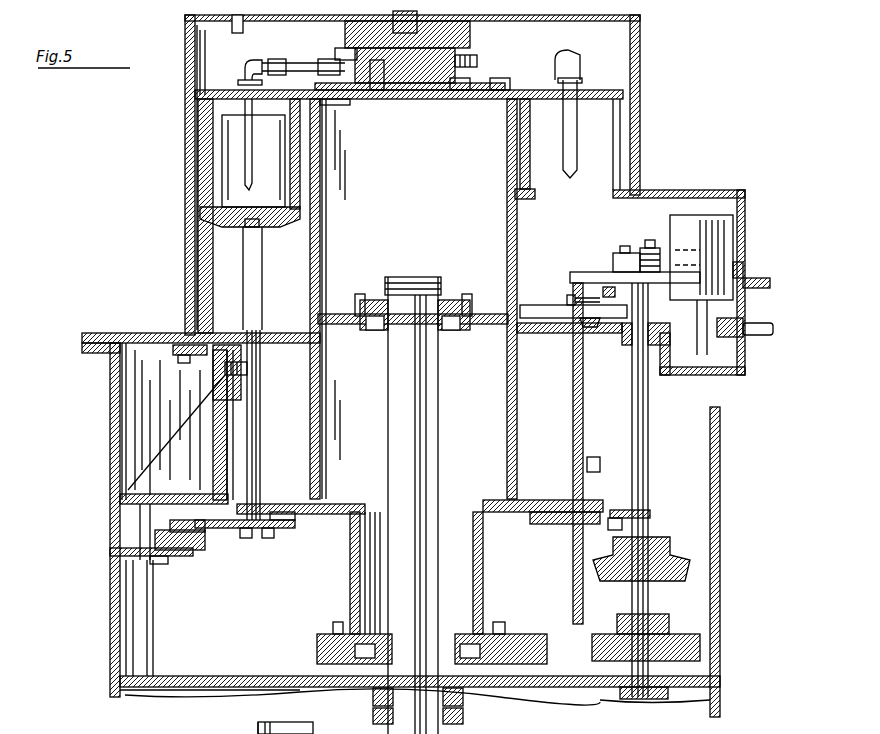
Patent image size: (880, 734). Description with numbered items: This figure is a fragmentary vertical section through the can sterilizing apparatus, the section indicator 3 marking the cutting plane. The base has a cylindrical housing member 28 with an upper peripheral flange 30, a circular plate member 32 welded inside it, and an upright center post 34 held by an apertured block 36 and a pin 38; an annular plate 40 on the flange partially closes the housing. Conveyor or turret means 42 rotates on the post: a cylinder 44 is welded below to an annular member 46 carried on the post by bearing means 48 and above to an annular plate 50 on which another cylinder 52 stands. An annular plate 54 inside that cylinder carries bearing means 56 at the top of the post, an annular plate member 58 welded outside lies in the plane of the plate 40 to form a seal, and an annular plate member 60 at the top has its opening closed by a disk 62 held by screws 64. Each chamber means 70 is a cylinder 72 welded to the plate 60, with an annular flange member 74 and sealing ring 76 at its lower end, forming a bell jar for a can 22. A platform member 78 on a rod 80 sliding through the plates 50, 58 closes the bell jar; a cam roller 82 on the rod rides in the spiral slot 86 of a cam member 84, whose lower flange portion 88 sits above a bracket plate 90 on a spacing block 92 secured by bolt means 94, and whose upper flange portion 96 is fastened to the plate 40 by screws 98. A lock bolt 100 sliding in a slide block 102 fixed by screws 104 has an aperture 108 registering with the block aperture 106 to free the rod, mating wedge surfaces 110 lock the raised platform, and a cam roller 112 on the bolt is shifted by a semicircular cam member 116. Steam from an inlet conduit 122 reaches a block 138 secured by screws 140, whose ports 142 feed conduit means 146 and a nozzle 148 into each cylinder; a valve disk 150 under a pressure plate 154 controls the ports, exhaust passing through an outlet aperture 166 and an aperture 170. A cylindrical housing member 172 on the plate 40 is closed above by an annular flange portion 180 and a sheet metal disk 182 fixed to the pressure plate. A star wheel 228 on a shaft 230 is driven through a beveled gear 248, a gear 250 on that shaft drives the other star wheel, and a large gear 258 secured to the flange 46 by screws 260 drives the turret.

The section line 3- 3 is at (192, 101).
The containers or cans 22 is at (720, 250).
The cylindrical housing member 28 is at (112, 582).
The upper peripheral flange 30 is at (86, 346).
The circular plate member 32 is at (168, 676).
The center post 34 is at (430, 393).
The apertured block 36 is at (465, 716).
The pin 38 is at (465, 698).
The annular plate 40 is at (136, 333).
The conveyor or turret means 42 is at (240, 282).
The cylinder 44 is at (350, 570).
The annular member 46 is at (490, 630).
The bearing means 48 is at (365, 672).
The annular plate 50 is at (342, 504).
The cylinder 52 is at (320, 420).
The annular plate 54 is at (330, 292).
The bearing means 56 is at (440, 335).
The annular plate member 58 is at (282, 333).
The annular plate member 60 is at (497, 100).
The disk 62 is at (463, 100).
The screws 64 is at (480, 81).
The chamber means 70 is at (190, 176).
The cylinder 72 is at (213, 138).
The annular flange member 74 is at (202, 200).
The sealing ring 76 is at (212, 219).
The platform member 78 is at (218, 226).
The rod 80 is at (252, 432).
The cam roller 82 is at (215, 398).
The cam member 84 is at (240, 420).
The spiral slot 86 is at (222, 380).
The lower flange portion 88 is at (170, 490).
The bracket plate 90 is at (152, 548).
The spacing block 92 is at (135, 520).
The bolt means 94 is at (123, 572).
The upper flange portion 96 is at (180, 350).
The screws 98 is at (180, 360).
The lock bolt 100 is at (170, 504).
The slide block 102 is at (266, 540).
The screws 104 is at (288, 540).
The aperture 106 is at (248, 540).
The aperture 108 is at (178, 560).
The cam or wedge surfaces 110 is at (262, 520).
The cam roller 112 is at (150, 580).
The cam member 116 is at (140, 600).
The inlet conduit 122 is at (258, 729).
The block 138 is at (380, 110).
The screws 140 is at (378, 114).
The ports 142 is at (338, 105).
The conduit means 146 is at (303, 62).
The nozzle 148 is at (248, 105).
The valve disk 150 is at (321, 168).
The pressure plate 154 is at (478, 33).
The outlet aperture 166 is at (435, 100).
The aperture 170 is at (478, 50).
The cylindrical housing member 172 is at (640, 52).
The annular flange portion 180 is at (593, 32).
The sheet metal disk 182 is at (252, 30).
The star wheel 228 is at (587, 272).
The shaft 230 is at (652, 403).
The beveled gear 248 is at (692, 556).
The gear 250 is at (692, 640).
The large gear 258 is at (530, 634).
The screws 260 is at (337, 630).